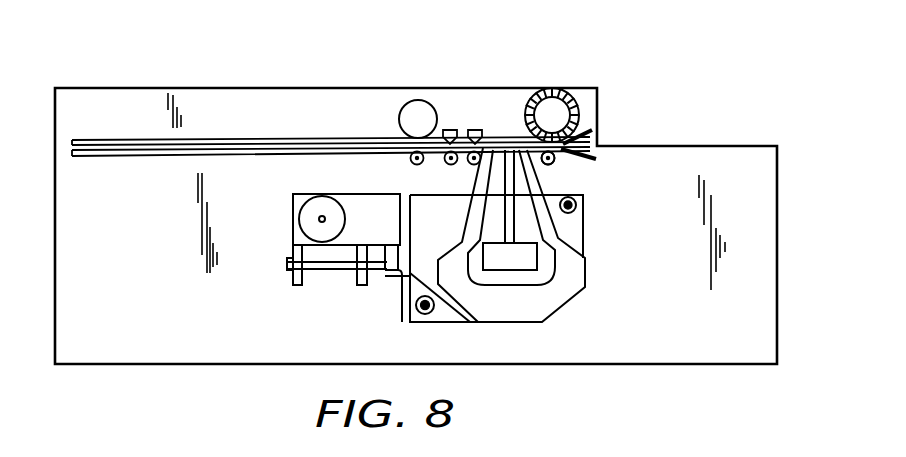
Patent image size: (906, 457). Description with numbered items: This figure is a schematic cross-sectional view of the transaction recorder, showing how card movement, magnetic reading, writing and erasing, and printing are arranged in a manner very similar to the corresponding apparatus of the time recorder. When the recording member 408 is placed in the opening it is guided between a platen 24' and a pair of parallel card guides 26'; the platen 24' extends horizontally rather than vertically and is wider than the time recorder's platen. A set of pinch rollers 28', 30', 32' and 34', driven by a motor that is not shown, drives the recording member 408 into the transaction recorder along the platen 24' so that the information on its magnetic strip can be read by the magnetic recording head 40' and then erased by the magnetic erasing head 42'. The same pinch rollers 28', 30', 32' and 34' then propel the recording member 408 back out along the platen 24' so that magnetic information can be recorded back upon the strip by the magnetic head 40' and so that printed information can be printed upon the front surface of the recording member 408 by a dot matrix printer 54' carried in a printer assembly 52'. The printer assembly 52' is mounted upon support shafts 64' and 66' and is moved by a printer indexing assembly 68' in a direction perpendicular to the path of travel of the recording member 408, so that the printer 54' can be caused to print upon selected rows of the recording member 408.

The platen 24' is at (331, 96).
The card guides 26' is at (331, 178).
The recording member 408 is at (596, 141).
The pinch roller 30' is at (394, 93).
The magnetic erasing head 42' is at (452, 96).
The magnetic recording head 40' is at (501, 97).
The pinch roller 28' is at (578, 97).
The pinch roller 34' is at (447, 168).
The pinch roller 32' is at (594, 168).
The printer assembly 52' is at (523, 235).
The dot matrix printer 54' is at (578, 196).
The support shaft 66' is at (608, 199).
The support shaft 64' is at (398, 324).
The printer indexing assembly 68' is at (307, 263).